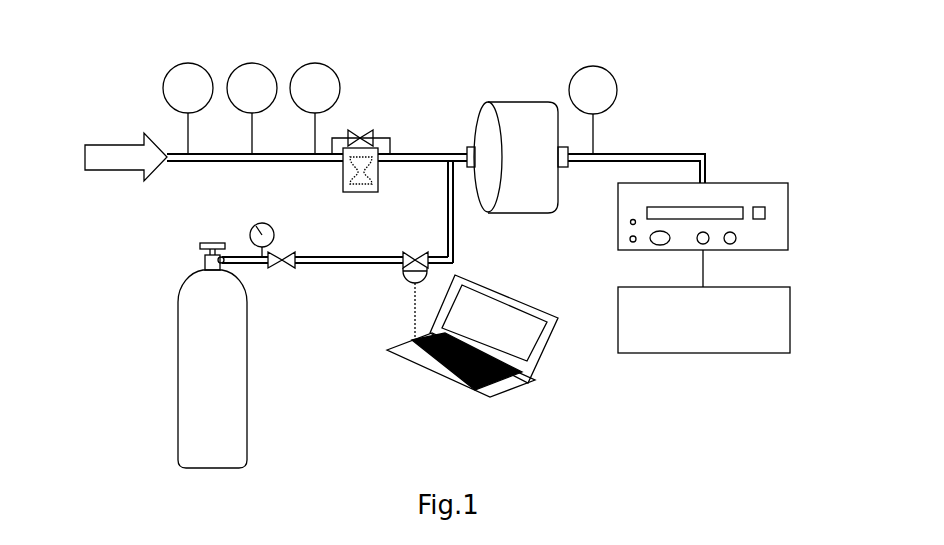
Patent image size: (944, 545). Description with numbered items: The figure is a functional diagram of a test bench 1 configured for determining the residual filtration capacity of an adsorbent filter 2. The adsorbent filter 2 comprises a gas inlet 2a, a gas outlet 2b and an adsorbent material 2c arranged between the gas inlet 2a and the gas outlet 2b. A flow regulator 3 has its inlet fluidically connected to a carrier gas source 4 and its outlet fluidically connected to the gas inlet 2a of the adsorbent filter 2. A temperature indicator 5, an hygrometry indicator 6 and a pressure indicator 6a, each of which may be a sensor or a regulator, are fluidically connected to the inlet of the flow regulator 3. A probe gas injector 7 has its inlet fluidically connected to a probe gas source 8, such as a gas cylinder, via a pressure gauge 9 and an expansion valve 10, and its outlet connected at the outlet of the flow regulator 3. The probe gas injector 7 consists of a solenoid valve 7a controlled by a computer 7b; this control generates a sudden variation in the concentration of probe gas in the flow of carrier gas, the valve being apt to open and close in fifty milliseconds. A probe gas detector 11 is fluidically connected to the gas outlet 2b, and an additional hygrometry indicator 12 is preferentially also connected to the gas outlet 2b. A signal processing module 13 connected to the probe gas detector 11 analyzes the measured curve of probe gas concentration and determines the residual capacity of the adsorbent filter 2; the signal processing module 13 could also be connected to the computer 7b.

The test bench 1 is at (728, 60).
The adsorbent filter 2 is at (494, 153).
The gas inlet 2a is at (469, 147).
The gas outlet 2b is at (564, 167).
The adsorbent material 2c is at (522, 210).
The flow regulator 3 is at (378, 170).
The carrier gas source 4 is at (107, 145).
The temperature indicator 5 is at (252, 63).
The hygrometry indicator 6 is at (188, 63).
The pressure indicator 6a is at (315, 63).
The probe gas injector 7 is at (466, 337).
The solenoid valve 7a is at (414, 251).
The computer 7b is at (538, 355).
The probe gas source 8 is at (185, 348).
The pressure gauge 9 is at (263, 222).
The expansion valve 10 is at (282, 269).
The probe gas detector 11 is at (765, 183).
The additional hygrometry indicator 12 is at (601, 67).
The signal processing module 13 is at (763, 353).